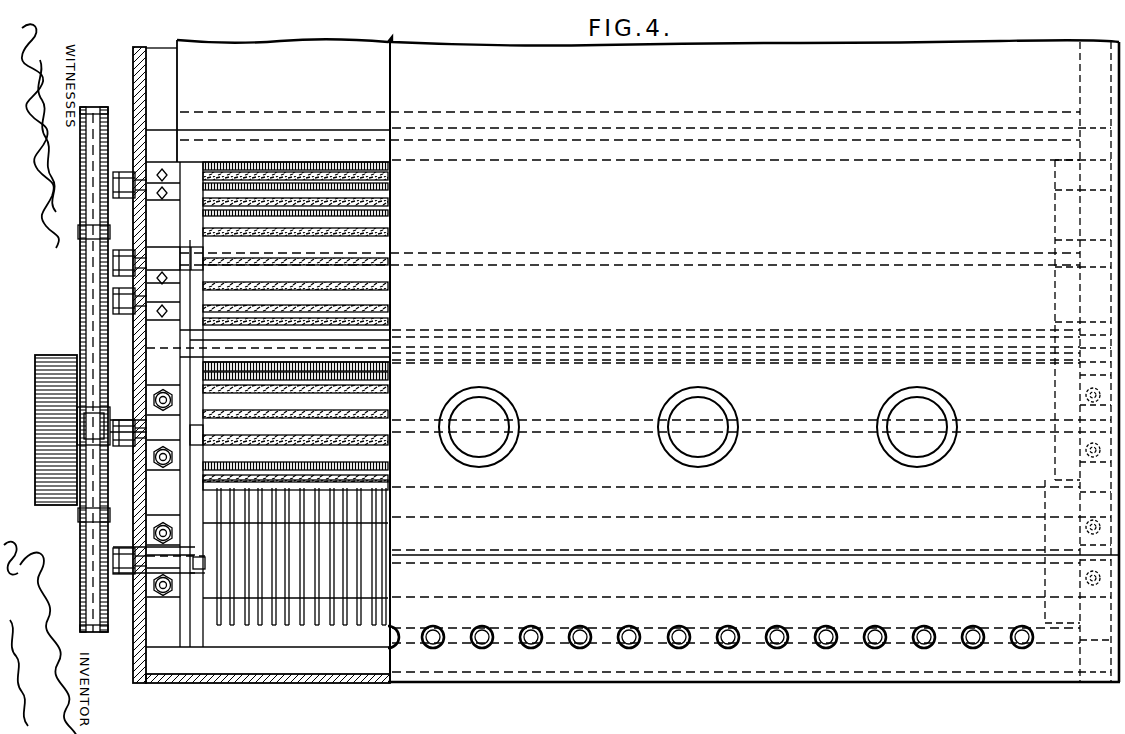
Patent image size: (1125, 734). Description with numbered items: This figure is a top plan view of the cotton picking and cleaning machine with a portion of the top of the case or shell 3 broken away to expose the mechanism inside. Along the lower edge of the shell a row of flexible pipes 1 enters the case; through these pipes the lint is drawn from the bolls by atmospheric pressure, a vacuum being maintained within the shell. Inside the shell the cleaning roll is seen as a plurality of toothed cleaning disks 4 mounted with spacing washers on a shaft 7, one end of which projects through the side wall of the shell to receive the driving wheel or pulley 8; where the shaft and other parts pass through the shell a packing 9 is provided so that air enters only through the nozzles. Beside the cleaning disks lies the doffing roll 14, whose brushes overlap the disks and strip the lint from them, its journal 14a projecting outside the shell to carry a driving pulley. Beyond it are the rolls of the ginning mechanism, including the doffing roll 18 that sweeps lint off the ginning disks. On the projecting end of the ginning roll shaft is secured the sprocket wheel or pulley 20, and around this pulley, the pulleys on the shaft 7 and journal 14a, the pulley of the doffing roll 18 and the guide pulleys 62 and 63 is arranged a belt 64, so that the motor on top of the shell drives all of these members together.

The flexible pipes 1 is at (625, 645).
The case or shell 3 is at (333, 682).
The cleaning disks 4 is at (230, 628).
The shaft 7 is at (200, 573).
The driving wheel or pulley 8 is at (82, 563).
The packing 9 is at (125, 248).
The doffing roll 14 is at (372, 410).
The journal 14a is at (200, 445).
The doffing roll 18 is at (385, 224).
The sprocket wheel or pulley 20 is at (90, 368).
The guide pulley 62 is at (82, 290).
The guide pulley 63 is at (82, 232).
The belt 64 is at (95, 518).